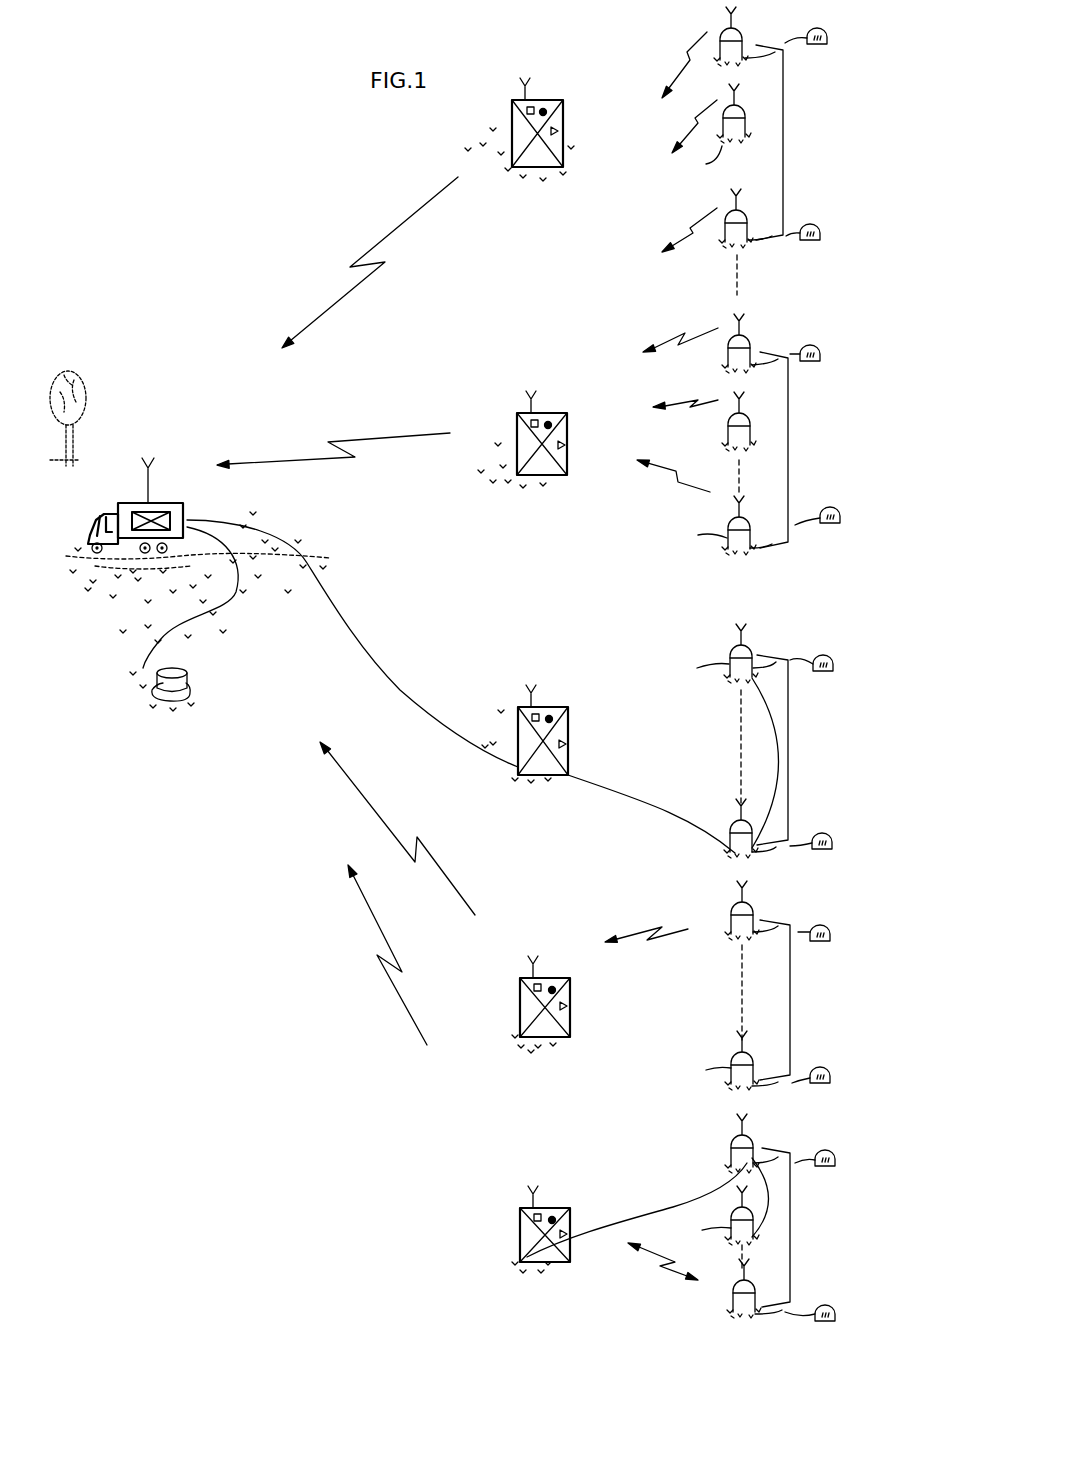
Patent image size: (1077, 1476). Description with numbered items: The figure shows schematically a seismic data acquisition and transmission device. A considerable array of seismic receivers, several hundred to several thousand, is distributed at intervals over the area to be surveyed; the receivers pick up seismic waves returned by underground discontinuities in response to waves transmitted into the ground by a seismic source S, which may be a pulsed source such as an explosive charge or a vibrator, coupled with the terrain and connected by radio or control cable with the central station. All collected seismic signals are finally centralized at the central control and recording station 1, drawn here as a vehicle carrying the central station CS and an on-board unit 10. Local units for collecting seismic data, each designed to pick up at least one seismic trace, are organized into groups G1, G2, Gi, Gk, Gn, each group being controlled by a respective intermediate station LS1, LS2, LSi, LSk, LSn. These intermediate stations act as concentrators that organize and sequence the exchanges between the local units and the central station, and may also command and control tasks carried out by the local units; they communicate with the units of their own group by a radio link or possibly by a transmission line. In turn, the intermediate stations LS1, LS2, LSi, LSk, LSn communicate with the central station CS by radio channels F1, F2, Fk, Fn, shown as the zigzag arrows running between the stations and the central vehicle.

The central control and recording station 1 is at (93, 505).
The central processing unit 10 is at (168, 511).
The central station CS is at (142, 467).
The seismic source S is at (178, 672).
The intermediate station LS1 is at (519, 123).
The intermediate station LS2 is at (531, 435).
The intermediate station LSi is at (530, 731).
The intermediate station LSk is at (550, 1002).
The intermediate station LSn is at (548, 1225).
The group of local collecting units G1 is at (750, 151).
The group of local collecting units G2 is at (739, 434).
The group of local collecting units Gi is at (702, 751).
The group of local collecting units Gk is at (718, 994).
The group of local collecting units Gn is at (682, 1217).
The radio channel F1 is at (370, 262).
The radio channel F2 is at (333, 437).
The radio channel Fk is at (397, 828).
The radio channel Fn is at (387, 955).